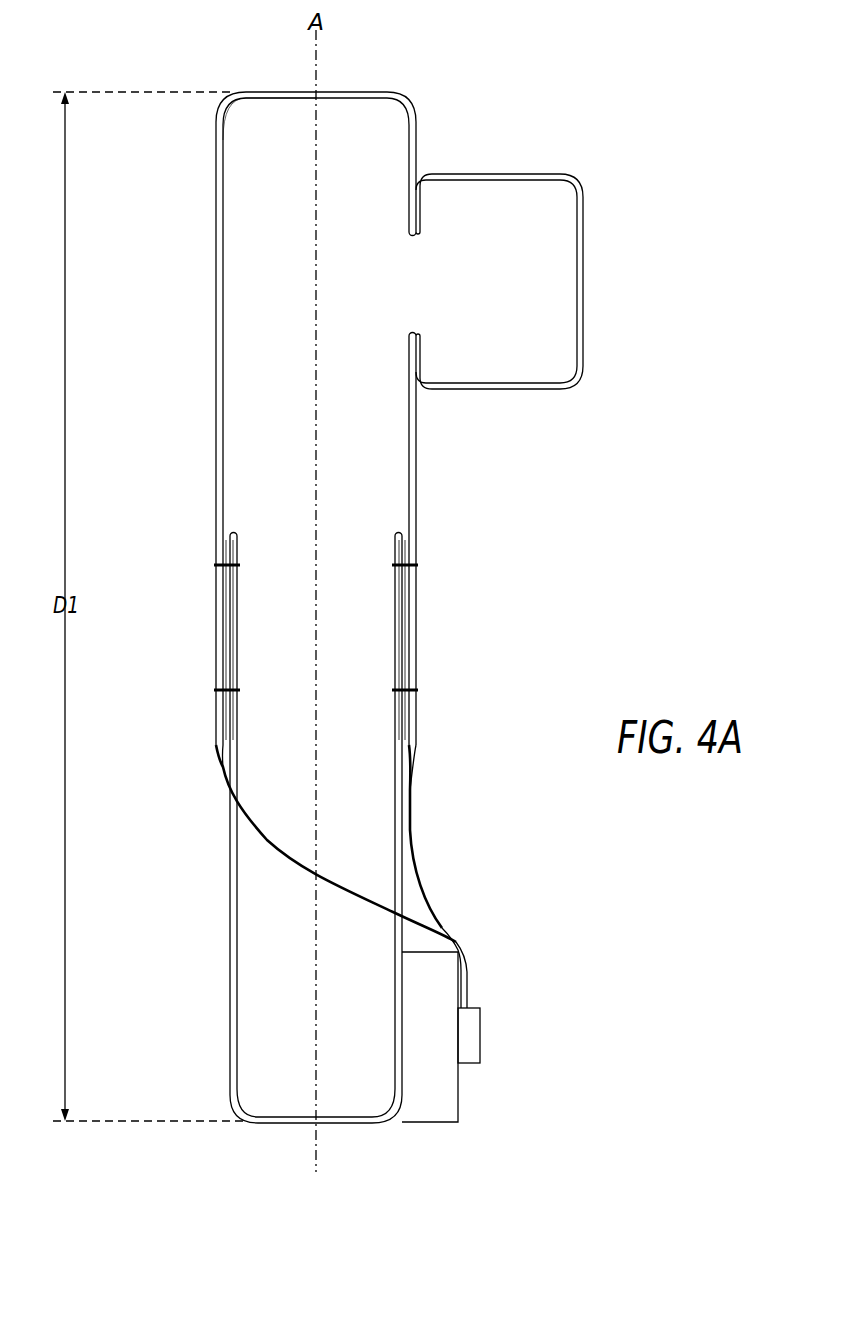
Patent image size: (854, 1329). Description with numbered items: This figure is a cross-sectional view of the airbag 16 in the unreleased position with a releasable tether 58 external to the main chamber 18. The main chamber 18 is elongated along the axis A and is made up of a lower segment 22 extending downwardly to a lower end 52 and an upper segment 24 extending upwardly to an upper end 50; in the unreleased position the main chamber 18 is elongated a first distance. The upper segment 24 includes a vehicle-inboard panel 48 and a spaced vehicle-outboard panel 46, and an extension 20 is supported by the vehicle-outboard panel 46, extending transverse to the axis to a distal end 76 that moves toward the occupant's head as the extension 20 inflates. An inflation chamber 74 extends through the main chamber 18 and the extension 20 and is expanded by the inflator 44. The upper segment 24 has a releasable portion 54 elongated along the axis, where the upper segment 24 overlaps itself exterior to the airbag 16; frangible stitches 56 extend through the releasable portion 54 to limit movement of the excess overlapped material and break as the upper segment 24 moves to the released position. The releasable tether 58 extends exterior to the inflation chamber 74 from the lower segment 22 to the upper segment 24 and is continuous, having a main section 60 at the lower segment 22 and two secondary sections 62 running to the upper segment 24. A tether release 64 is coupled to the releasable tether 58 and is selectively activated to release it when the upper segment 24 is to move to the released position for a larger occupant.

The airbag 16 is at (441, 104).
The main chamber 18 is at (216, 318).
The extension 20 is at (520, 174).
The lower segment 22 is at (226, 920).
The upper segment 24 is at (213, 243).
The inflator 44 is at (460, 1090).
The vehicle-outboard panel 46 is at (418, 447).
The vehicle-inboard panel 48 is at (216, 400).
The upper end 50 is at (358, 93).
The lower end 52 is at (290, 1125).
The releasable portion 54 is at (445, 624).
The stitch 56 is at (216, 565).
The releasable tether 58 is at (424, 880).
The main section 60 is at (451, 937).
The secondary sections 62 is at (224, 778).
The tether release 64 is at (482, 1028).
The inflation chamber 74 is at (282, 127).
The distal end 76 is at (584, 258).